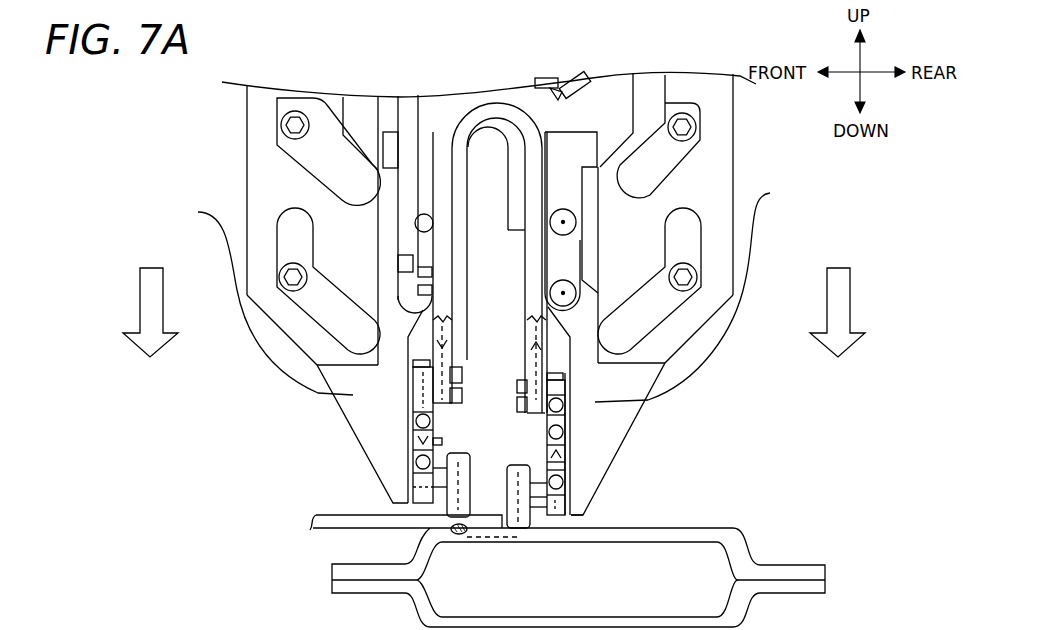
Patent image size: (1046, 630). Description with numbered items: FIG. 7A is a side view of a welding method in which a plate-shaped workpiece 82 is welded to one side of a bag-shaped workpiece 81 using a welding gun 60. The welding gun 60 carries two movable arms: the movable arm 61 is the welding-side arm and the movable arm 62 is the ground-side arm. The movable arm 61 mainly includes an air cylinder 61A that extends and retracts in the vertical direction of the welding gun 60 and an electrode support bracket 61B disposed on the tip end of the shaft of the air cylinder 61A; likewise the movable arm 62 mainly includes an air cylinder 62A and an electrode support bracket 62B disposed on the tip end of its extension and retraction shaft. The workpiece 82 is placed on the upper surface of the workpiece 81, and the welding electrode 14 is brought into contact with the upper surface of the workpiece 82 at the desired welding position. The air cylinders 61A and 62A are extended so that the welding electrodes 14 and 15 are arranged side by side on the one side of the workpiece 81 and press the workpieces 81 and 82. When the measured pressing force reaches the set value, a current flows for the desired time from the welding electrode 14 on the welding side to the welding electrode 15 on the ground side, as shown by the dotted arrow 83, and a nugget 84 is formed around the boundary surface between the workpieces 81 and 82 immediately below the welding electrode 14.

The welding gun 60 is at (496, 68).
The movable arm 61 is at (155, 153).
The air cylinder 61A is at (433, 103).
The electrode support bracket 61B is at (283, 294).
The movable arm 62 is at (818, 133).
The air cylinder 62A is at (558, 118).
The electrode support bracket 62B is at (691, 294).
The dotted arrow 83 is at (405, 400).
The plate-shaped workpiece 82 is at (337, 513).
The welding electrode 14 is at (458, 463).
The welding electrode 15 is at (514, 478).
The bag-shaped workpiece 81 is at (658, 540).
The nugget 84 is at (459, 537).